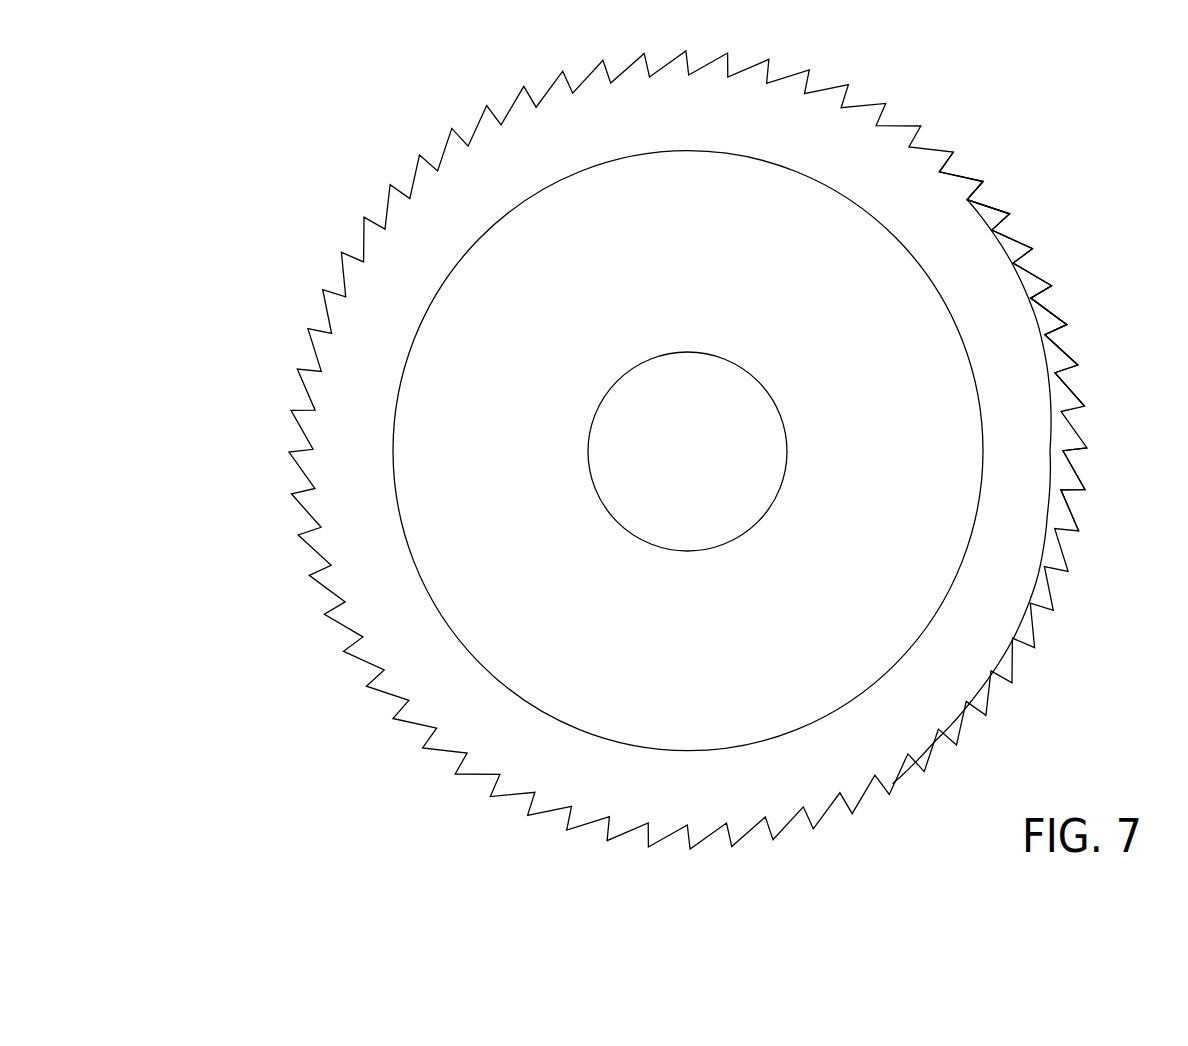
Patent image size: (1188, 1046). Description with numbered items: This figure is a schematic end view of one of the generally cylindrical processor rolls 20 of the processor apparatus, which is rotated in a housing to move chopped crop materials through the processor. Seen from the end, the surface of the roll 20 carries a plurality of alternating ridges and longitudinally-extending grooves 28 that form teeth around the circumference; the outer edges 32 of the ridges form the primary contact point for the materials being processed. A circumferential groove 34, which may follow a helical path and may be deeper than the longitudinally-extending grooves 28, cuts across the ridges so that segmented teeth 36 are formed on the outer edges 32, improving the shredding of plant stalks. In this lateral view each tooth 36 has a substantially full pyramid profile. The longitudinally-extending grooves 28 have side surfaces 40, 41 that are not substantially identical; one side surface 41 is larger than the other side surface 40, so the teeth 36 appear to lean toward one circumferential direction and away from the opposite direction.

The processor roll 20 is at (296, 218).
The longitudinally-extending grooves 28 is at (1050, 377).
The outer edges of the ridges 32 is at (1047, 290).
The circumferential groove 34 is at (1050, 477).
The segmented teeth 36 is at (1042, 328).
The side surface 40 is at (966, 200).
The side surface 41 is at (997, 208).